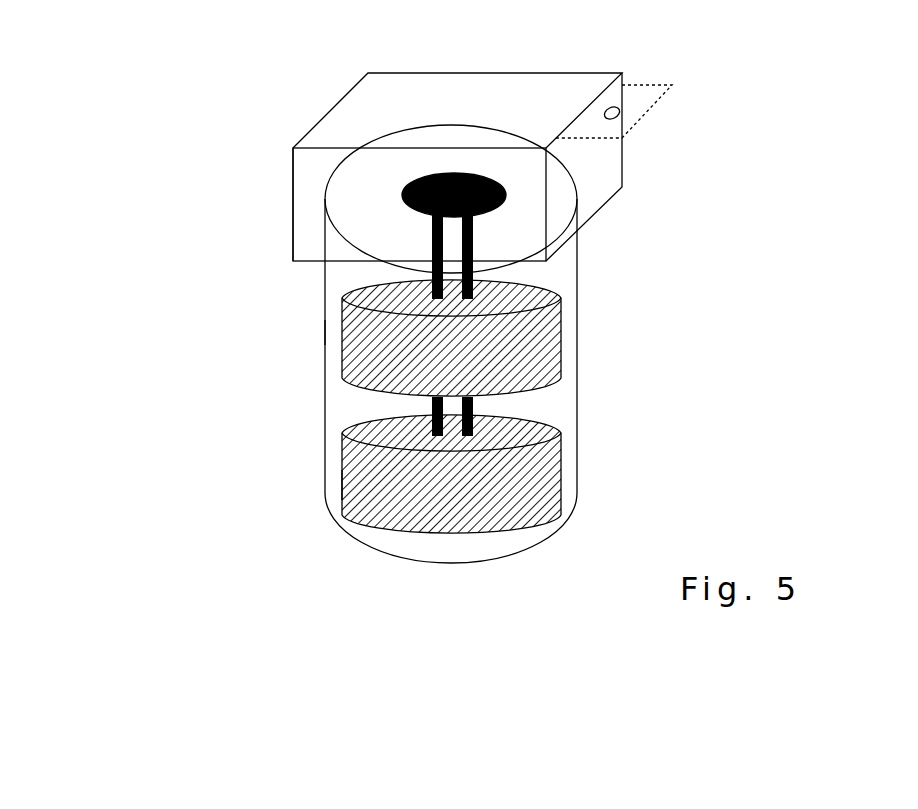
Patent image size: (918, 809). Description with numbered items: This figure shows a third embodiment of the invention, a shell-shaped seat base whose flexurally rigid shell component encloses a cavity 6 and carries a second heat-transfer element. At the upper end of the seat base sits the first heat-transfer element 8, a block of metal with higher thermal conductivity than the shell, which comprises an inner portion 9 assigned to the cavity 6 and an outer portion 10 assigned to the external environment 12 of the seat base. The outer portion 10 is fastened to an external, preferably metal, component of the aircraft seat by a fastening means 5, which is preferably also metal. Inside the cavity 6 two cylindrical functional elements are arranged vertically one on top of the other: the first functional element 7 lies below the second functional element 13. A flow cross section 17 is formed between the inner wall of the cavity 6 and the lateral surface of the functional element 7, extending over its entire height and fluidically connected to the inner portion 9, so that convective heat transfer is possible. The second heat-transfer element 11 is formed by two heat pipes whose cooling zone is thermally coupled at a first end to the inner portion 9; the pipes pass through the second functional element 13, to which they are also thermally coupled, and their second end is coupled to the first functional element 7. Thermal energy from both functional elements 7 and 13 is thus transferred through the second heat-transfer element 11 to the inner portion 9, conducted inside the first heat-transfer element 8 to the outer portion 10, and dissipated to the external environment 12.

The outer portion 10 is at (360, 112).
The first heat-transfer element 8 is at (293, 187).
The fastening means 5 is at (642, 105).
The inner portion 9 is at (530, 243).
The second heat-transfer element 11 is at (497, 417).
The second functional element 13 is at (553, 342).
The flow cross section 17 is at (332, 333).
The first functional element 7 is at (560, 478).
The cavity 6 is at (337, 453).
The external environment 12 is at (188, 377).